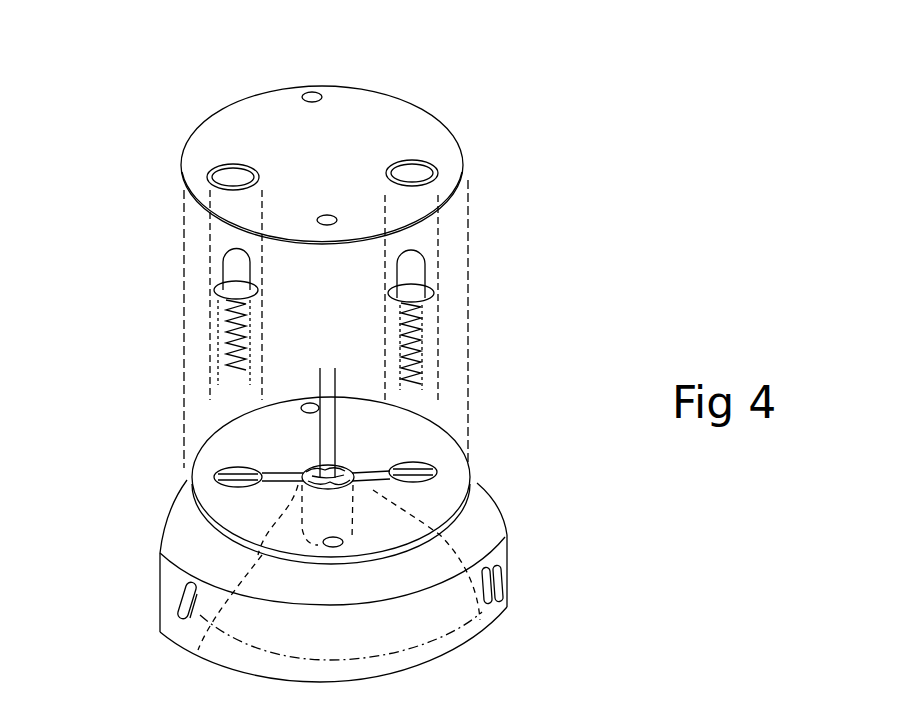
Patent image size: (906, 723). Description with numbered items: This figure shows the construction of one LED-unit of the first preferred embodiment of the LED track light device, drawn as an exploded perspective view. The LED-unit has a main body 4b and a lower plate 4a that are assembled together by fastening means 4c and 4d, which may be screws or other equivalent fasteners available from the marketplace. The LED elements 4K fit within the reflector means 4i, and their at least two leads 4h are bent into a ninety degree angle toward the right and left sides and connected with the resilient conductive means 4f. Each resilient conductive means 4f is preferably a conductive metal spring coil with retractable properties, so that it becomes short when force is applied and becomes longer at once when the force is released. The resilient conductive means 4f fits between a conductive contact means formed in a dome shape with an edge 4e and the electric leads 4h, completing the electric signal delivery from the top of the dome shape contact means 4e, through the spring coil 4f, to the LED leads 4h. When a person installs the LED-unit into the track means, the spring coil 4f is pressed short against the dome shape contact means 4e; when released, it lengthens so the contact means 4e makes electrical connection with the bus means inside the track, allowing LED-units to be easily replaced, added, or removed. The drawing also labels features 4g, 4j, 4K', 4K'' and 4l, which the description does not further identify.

The lower plate 4a is at (405, 95).
The main body 4b is at (197, 457).
The fastening means 4c is at (315, 95).
The fastening means 4d is at (313, 400).
The dome shape contact means 4e is at (228, 272).
The resilient conductive means 4f is at (232, 337).
The central hub 4g is at (410, 455).
The leads 4h is at (447, 473).
The reflector means 4i is at (403, 512).
The base 4j is at (510, 552).
The LED elements 4K is at (203, 520).
The right slot in base 4K' is at (541, 598).
The left slot in base 4K'' is at (132, 628).
The large holes in top disc 4l is at (210, 175).